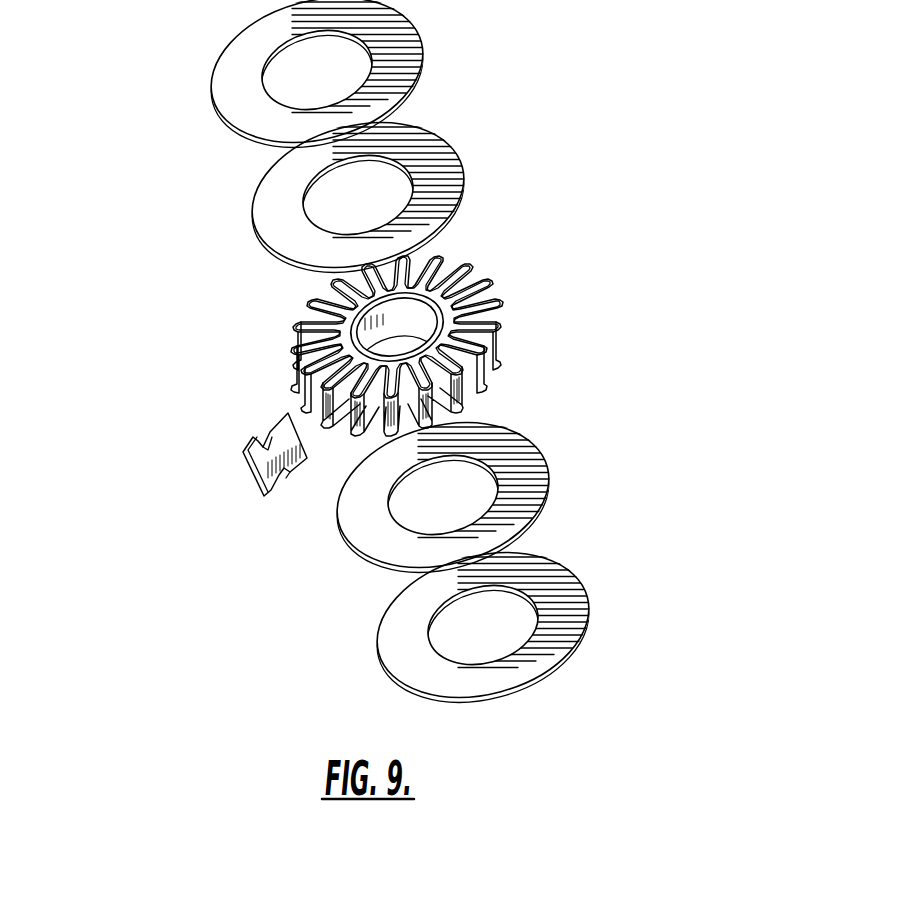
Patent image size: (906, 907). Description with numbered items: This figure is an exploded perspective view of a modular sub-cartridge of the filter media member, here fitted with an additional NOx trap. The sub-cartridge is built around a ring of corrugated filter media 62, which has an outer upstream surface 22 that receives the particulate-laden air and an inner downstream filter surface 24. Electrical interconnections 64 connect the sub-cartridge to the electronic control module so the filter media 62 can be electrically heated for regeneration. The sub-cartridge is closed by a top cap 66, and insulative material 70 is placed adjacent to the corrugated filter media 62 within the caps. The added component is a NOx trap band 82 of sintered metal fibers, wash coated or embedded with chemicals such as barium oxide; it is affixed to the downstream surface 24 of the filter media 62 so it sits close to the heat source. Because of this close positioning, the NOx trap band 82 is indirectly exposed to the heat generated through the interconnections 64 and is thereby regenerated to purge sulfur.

The outer upstream surface 22 is at (367, 316).
The inner downstream filter surface 24 is at (472, 267).
The filter media 62 is at (494, 381).
The electrical interconnections 64 is at (262, 467).
The top cap 66 is at (210, 83).
The insulative material 70 is at (438, 175).
The NOx trap band 82 is at (415, 317).